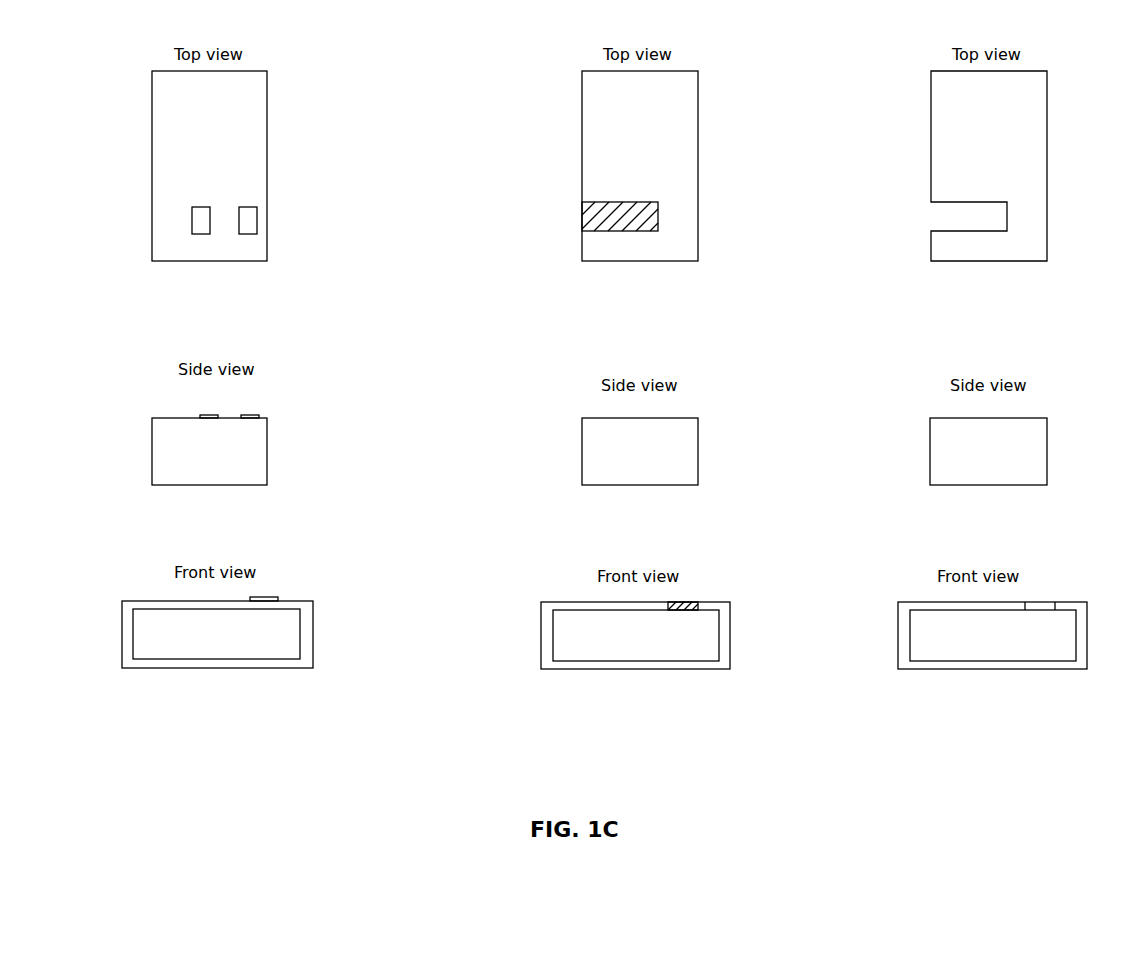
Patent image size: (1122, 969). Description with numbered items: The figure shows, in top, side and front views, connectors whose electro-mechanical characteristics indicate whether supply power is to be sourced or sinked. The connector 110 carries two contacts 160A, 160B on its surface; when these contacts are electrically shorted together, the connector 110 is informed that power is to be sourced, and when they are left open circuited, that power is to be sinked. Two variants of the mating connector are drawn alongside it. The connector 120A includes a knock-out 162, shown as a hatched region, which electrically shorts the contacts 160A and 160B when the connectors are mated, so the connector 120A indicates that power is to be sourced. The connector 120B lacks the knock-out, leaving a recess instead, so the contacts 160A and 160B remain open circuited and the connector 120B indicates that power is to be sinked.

The connector 110 is at (152, 137).
The contact 160A is at (201, 207).
The contact 160B is at (251, 207).
The connector 120A is at (582, 137).
The knock-out 162 is at (634, 202).
The connector 120B is at (931, 137).